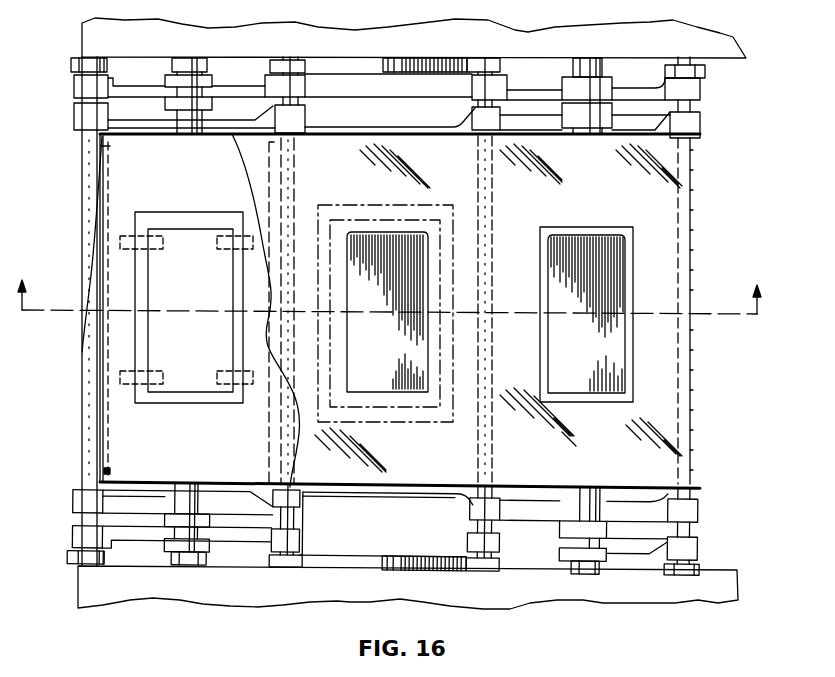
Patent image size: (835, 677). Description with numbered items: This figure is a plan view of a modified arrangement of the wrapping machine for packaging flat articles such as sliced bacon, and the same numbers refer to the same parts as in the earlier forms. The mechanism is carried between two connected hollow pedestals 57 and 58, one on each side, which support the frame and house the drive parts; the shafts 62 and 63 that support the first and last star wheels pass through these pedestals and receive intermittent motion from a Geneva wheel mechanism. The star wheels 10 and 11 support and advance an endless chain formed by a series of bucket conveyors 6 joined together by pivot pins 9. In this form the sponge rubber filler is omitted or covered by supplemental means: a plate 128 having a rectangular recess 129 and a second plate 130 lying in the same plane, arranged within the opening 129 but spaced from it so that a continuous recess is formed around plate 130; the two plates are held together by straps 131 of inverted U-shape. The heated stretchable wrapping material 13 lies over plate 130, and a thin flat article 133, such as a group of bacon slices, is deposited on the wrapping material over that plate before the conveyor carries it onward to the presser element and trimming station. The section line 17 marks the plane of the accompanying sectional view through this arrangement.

The pedestal 58 is at (95, 34).
The pedestal 57 is at (722, 587).
The wrapping material 13 is at (100, 163).
The pivot pins 9 is at (84, 375).
The plate 128 is at (117, 450).
The rectangular recess 129 is at (150, 403).
The plate 130 is at (190, 237).
The straps 131 is at (142, 246).
The article 133 is at (383, 385).
The bucket conveyors 6 is at (162, 492).
The star wheel 10 is at (145, 530).
The star wheel 11 is at (638, 540).
The shaft 63 is at (192, 558).
The shaft 62 is at (580, 564).
The section line 17- 17 is at (392, 286).